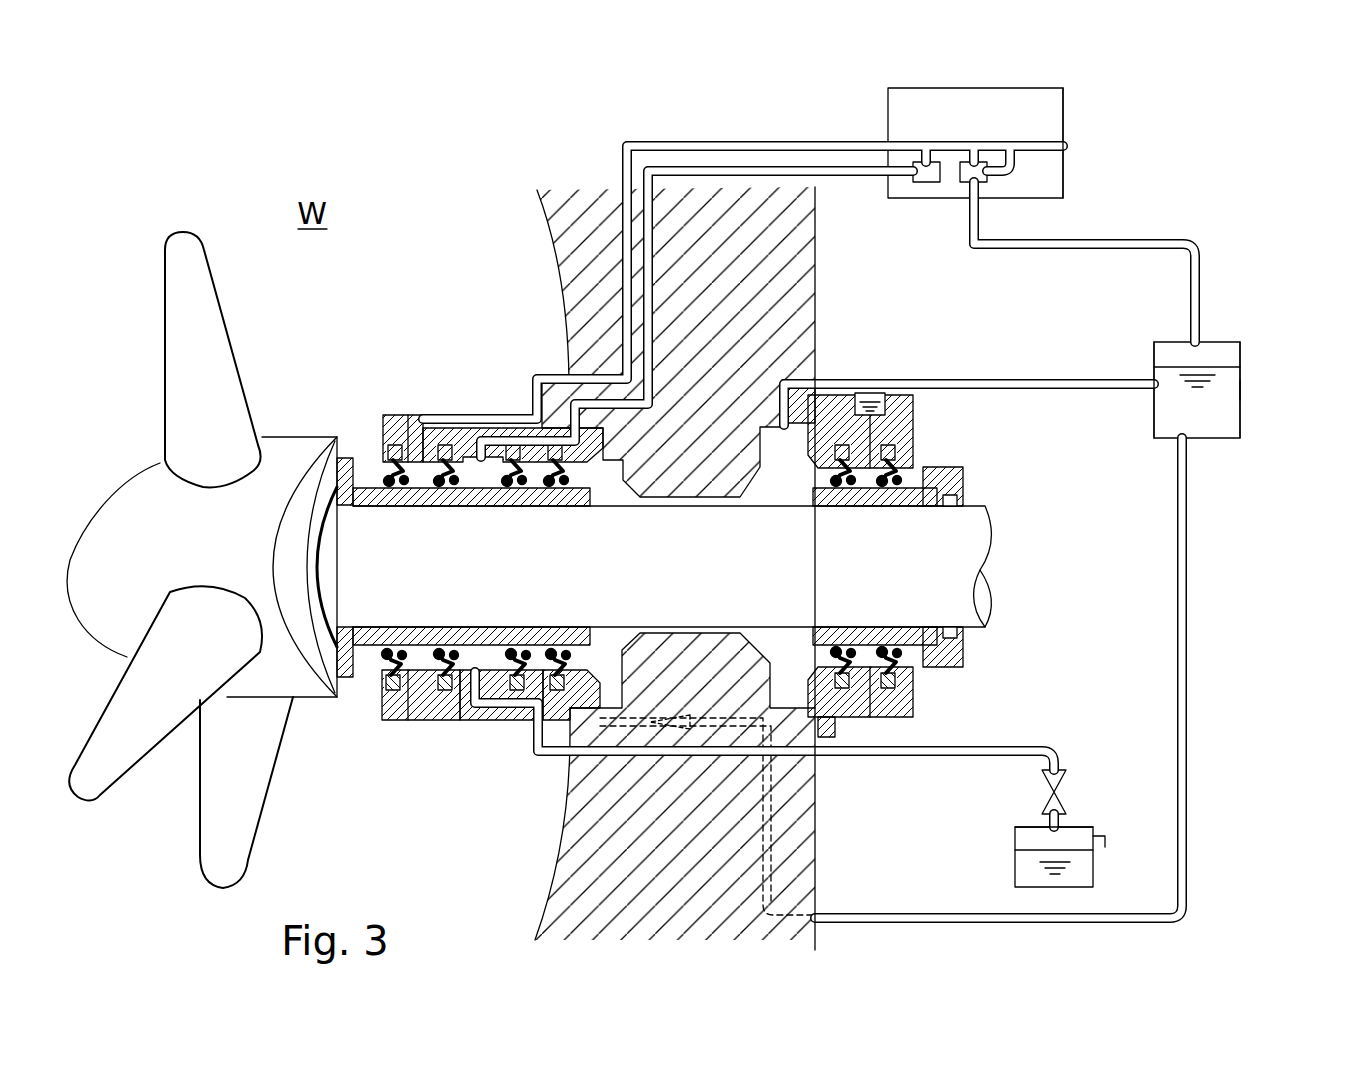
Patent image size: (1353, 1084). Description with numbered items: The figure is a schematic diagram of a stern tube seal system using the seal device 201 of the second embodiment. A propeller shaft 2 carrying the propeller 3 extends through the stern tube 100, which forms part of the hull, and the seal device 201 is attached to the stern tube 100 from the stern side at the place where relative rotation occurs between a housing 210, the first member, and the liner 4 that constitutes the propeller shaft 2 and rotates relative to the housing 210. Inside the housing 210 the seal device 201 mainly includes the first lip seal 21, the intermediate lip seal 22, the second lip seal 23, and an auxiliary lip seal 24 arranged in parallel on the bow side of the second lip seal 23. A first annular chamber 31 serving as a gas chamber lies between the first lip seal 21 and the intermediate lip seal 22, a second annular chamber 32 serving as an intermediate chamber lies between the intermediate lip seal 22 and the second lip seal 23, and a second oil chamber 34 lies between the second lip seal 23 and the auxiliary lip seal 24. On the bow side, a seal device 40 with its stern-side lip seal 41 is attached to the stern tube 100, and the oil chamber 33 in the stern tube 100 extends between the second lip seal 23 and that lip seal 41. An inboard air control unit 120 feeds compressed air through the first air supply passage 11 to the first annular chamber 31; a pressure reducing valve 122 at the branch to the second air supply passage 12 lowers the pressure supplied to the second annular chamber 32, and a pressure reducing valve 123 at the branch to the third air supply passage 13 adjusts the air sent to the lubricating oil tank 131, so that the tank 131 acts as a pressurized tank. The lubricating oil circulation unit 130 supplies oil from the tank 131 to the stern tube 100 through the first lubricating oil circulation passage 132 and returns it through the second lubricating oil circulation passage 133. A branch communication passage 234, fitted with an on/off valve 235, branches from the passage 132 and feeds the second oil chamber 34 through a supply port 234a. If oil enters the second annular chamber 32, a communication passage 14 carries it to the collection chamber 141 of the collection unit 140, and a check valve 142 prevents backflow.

The propeller shaft 2 is at (975, 539).
The propeller 3 is at (176, 363).
The liner 4 is at (373, 672).
The first air supply passage 11 is at (535, 402).
The second air supply passage 12 is at (562, 377).
The third air supply passage 13 is at (1142, 240).
The communication passage 14 is at (560, 758).
The first lip seal 21 is at (408, 493).
The intermediate lip seal 22 is at (456, 493).
The second lip seal 23 is at (516, 493).
The auxiliary lip seal 24 is at (555, 493).
The first annular chamber 31 is at (423, 652).
The second annular chamber 32 is at (482, 654).
The oil chamber 33 is at (555, 660).
The second oil chamber 34 is at (510, 660).
The seal device 40 is at (928, 422).
The lip seal 41 is at (853, 507).
The stern tube 100 is at (548, 249).
The air control unit 120 is at (1070, 92).
The pressure reducing valve 122 is at (925, 185).
The pressure reducing valve 123 is at (968, 185).
The lubricating oil circulation unit 130 is at (1222, 333).
The lubricating oil tank 131 is at (1243, 394).
The first lubricating oil circulation passage 132 is at (1189, 681).
The second lubricating oil circulation passage 133 is at (968, 382).
The collection unit 140 is at (1082, 808).
The collection chamber 141 is at (1014, 840).
The check valve 142 is at (1048, 787).
The seal device 201 is at (434, 352).
The housing 210 is at (378, 432).
The branch communication passage 234 is at (598, 653).
The supply port 234a is at (515, 722).
The on/off valve 235 is at (740, 690).